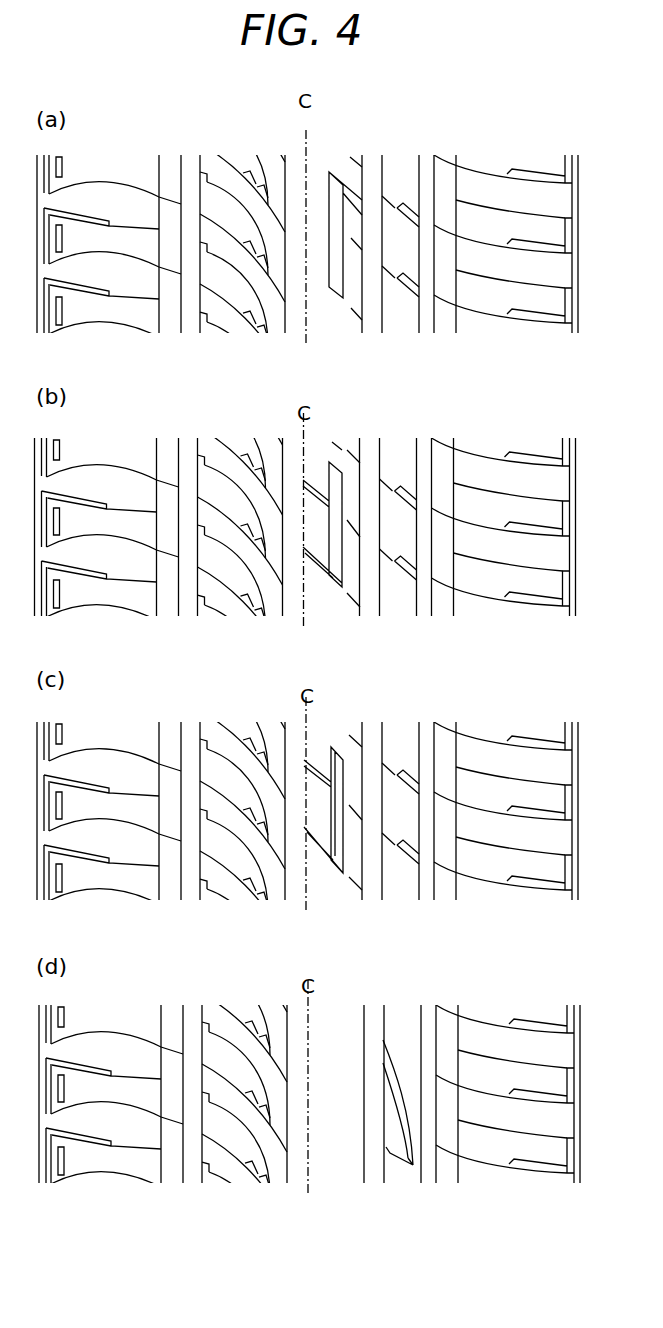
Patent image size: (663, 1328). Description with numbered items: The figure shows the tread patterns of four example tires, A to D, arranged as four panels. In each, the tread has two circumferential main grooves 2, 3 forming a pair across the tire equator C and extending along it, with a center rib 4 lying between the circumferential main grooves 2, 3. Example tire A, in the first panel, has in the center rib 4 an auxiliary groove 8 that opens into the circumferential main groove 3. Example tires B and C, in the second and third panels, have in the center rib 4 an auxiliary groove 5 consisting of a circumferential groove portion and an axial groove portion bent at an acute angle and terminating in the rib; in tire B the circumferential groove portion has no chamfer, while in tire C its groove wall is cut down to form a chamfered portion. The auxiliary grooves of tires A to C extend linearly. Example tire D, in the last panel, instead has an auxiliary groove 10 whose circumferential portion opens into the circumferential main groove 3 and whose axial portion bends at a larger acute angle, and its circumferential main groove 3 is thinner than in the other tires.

The circumferential main groove 2 is at (290, 323).
The circumferential main groove 3 is at (373, 323).
The center rib 4 is at (353, 165).
The auxiliary groove 5 is at (346, 492).
The auxiliary groove 8 is at (329, 172).
The auxiliary groove 10 is at (410, 1172).